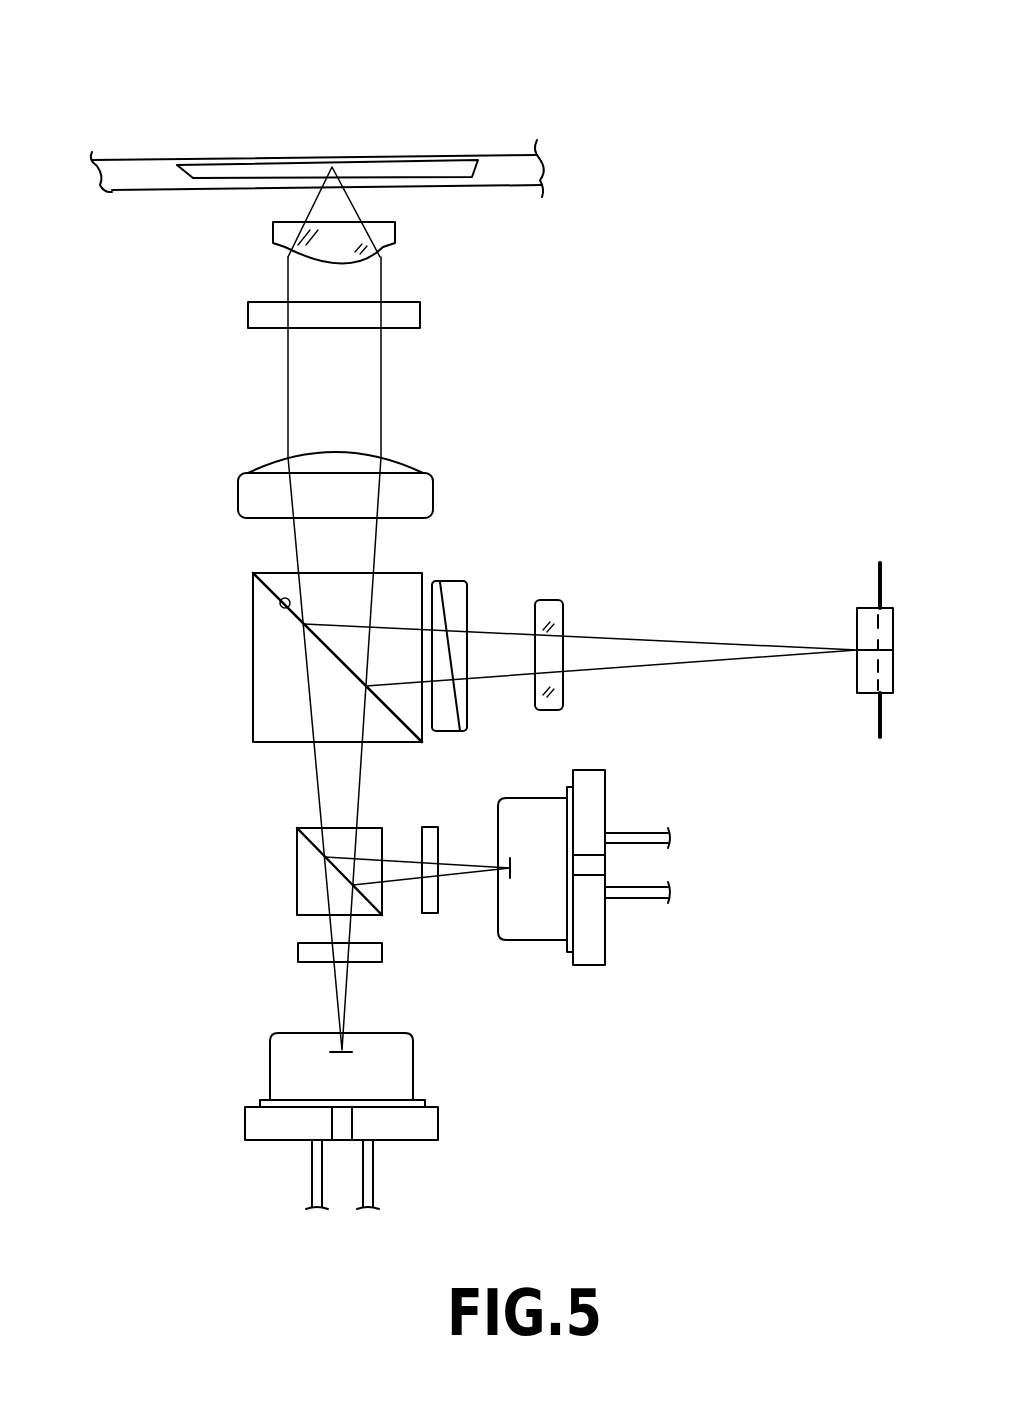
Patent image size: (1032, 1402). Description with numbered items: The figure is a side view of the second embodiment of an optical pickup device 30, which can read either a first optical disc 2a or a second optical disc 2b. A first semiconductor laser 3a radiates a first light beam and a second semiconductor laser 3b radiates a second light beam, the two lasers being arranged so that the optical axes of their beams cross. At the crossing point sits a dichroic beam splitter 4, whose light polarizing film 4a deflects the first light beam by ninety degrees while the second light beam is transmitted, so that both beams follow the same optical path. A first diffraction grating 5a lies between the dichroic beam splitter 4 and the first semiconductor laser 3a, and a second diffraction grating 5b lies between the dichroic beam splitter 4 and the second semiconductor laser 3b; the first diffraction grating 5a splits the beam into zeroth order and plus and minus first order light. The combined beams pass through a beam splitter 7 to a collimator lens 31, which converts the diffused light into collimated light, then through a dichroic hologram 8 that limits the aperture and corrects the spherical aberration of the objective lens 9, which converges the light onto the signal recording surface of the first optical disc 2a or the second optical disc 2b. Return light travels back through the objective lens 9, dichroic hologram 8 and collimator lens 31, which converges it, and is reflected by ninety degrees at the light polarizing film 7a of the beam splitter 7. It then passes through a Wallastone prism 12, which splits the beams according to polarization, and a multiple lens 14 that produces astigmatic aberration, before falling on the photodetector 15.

The first optical disc 2a is at (163, 160).
The second optical disc 2b is at (438, 178).
The first semiconductor laser 3a is at (545, 923).
The second semiconductor laser 3b is at (397, 1078).
The dichroic beam splitter 4 is at (297, 902).
The light polarizing film 4a is at (315, 838).
The first diffraction grating 5a is at (435, 912).
The second diffraction grating 5b is at (307, 952).
The beam splitter 7 is at (265, 712).
The light polarizing film 7a is at (280, 603).
The dichroic hologram 8 is at (253, 322).
The objective lens 9 is at (277, 233).
The Wallastone prism 12 is at (457, 590).
The multiple lens 14 is at (553, 612).
The photodetector 15 is at (860, 683).
The optical pickup device 30 is at (548, 66).
The collimator lens 31 is at (415, 490).